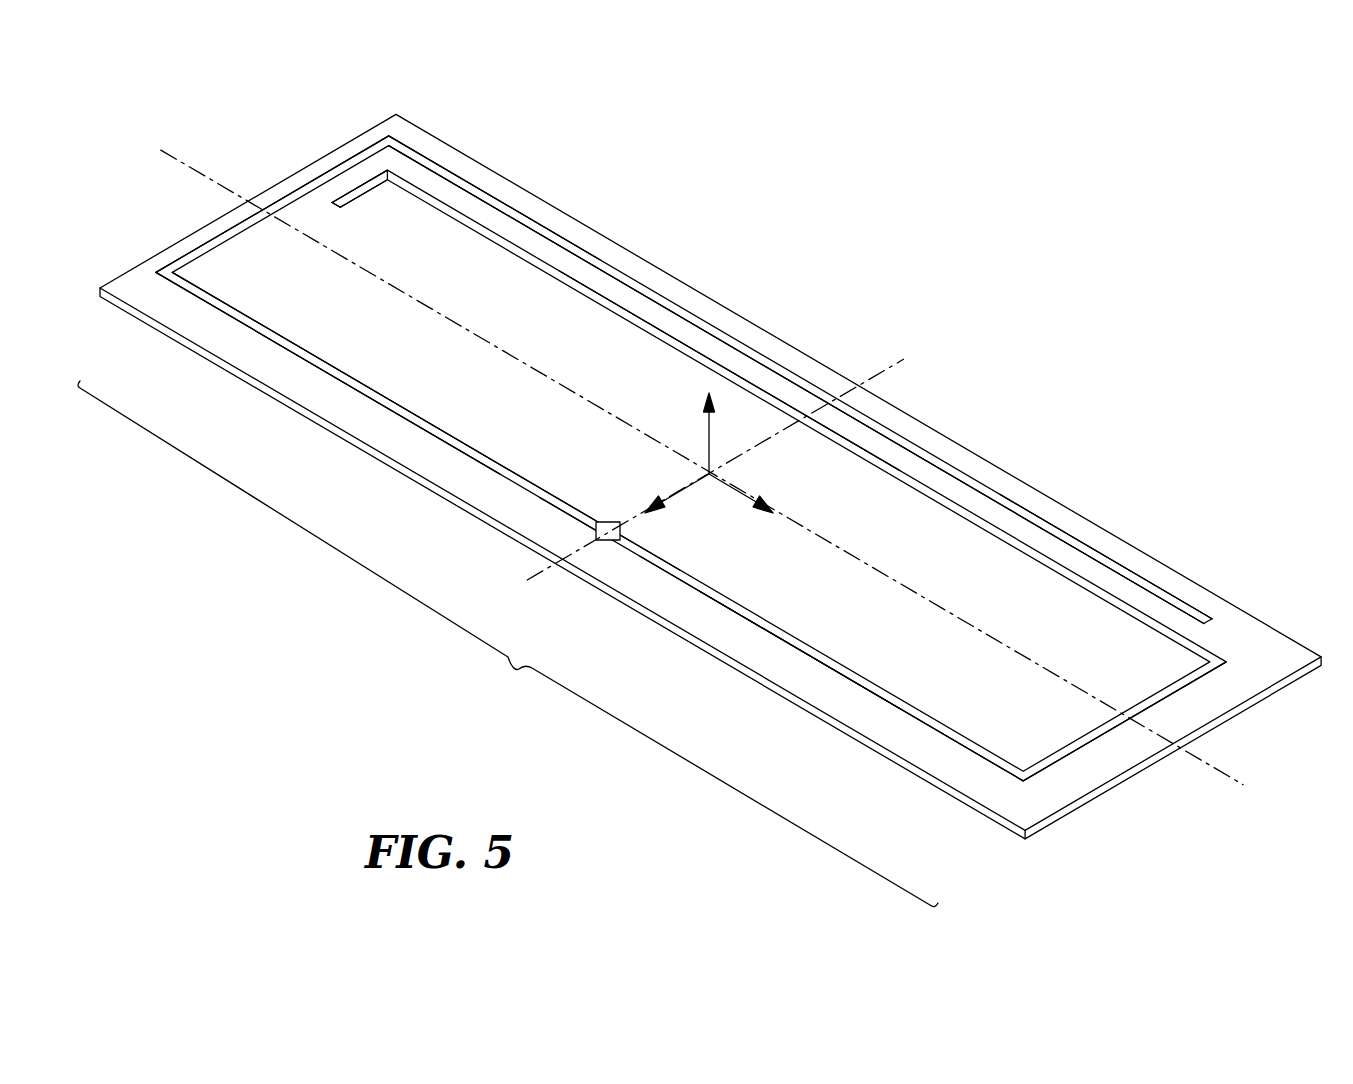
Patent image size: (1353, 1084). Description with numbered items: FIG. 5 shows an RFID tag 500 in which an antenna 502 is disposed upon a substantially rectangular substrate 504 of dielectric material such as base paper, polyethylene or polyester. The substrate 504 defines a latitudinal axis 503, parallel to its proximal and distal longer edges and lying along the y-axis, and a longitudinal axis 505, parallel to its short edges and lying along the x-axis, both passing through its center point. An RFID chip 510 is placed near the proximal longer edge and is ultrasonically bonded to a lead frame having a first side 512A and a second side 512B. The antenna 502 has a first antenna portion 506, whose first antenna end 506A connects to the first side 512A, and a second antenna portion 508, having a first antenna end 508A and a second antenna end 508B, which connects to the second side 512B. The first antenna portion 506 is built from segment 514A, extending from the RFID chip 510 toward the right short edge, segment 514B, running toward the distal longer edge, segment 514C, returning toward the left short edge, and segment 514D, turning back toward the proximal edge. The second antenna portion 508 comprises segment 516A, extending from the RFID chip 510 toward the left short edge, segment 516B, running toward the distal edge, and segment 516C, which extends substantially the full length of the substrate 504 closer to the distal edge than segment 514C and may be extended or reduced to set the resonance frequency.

The RFID tag 500 is at (705, 467).
The antenna 502 is at (508, 644).
The latitudinal axis 503 is at (1218, 773).
The substrate 504 is at (1085, 773).
The longitudinal axis 505 is at (877, 378).
The first antenna portion 506 is at (925, 490).
The first antenna end 506A is at (815, 656).
The second antenna portion 508 is at (550, 230).
The first antenna end 508A is at (455, 442).
The second antenna end 508B is at (1085, 546).
The RFID chip 510 is at (597, 542).
The first side of lead frame 512A is at (616, 544).
The second side of lead frame 512B is at (595, 523).
The segment 514A is at (915, 726).
The segment 514B is at (1161, 690).
The segment 514C is at (677, 340).
The segment 514D is at (353, 191).
The segment 516A is at (350, 388).
The segment 516B is at (203, 245).
The segment 516C is at (469, 182).